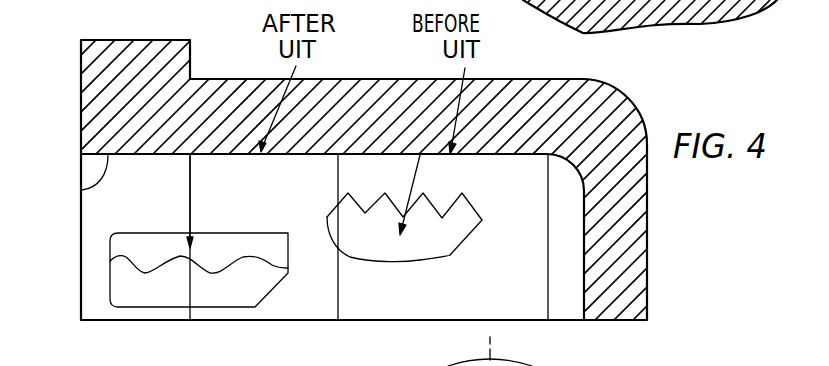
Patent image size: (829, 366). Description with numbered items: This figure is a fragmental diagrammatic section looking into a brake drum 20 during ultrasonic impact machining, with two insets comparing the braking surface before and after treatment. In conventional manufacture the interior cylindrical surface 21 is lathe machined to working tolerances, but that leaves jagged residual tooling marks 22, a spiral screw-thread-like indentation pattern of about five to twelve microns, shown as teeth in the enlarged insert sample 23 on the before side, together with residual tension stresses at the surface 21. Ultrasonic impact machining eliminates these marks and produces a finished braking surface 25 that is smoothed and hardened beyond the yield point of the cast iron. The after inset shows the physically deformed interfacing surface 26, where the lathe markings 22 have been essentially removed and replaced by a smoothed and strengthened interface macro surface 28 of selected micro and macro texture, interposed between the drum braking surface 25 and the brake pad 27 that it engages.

The brake drum 20 is at (631, 197).
The interior cylindrical surface 21 is at (496, 157).
The residual tooling marks 22 is at (365, 213).
The enlarged insert sample 23 is at (422, 213).
The finished braking surface 25 is at (82, 190).
The physically deformed interfacing surface 26 is at (250, 255).
The brake pad 27 is at (230, 284).
The smoothed and strengthened interface macro surface 28 is at (200, 270).